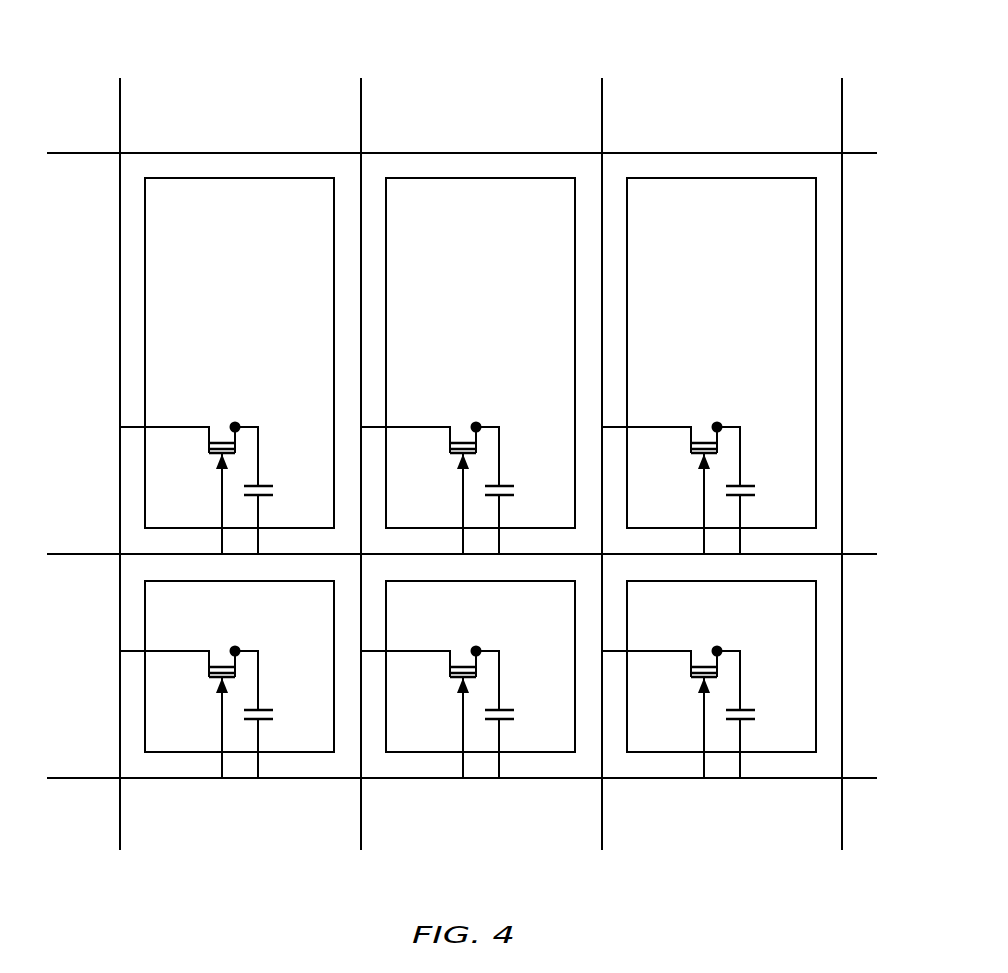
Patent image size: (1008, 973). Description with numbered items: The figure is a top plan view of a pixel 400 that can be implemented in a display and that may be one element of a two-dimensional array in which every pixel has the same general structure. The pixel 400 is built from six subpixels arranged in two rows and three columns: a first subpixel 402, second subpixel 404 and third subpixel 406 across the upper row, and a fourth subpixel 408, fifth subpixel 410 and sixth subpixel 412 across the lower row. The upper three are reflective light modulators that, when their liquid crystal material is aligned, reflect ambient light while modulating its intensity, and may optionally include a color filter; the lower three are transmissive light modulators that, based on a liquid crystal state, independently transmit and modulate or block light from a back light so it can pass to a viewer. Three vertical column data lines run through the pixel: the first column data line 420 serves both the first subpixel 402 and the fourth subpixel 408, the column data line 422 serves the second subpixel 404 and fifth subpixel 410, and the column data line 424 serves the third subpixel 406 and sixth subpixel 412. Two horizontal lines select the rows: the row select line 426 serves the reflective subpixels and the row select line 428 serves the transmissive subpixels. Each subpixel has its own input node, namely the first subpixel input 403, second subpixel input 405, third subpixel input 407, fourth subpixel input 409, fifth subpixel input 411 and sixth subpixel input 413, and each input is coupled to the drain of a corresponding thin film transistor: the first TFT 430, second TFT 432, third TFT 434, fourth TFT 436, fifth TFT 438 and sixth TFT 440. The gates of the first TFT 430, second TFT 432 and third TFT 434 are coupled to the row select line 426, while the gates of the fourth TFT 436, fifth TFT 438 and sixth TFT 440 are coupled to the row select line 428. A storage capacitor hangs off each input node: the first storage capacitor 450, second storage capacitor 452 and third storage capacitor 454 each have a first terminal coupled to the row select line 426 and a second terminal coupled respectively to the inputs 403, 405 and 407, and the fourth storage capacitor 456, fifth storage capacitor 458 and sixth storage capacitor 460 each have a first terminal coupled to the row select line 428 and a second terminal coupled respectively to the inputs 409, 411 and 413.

The pixel 400 is at (820, 32).
The first subpixel 402 is at (241, 197).
The second subpixel 404 is at (482, 197).
The third subpixel 406 is at (723, 197).
The fourth subpixel 408 is at (233, 739).
The fifth subpixel 410 is at (474, 739).
The sixth subpixel 412 is at (715, 739).
The first subpixel input 403 is at (236, 421).
The second subpixel input 405 is at (477, 421).
The third subpixel input 407 is at (718, 421).
The fourth subpixel input 409 is at (236, 645).
The fifth subpixel input 411 is at (477, 645).
The sixth subpixel input 413 is at (718, 645).
The first column data line 420 is at (120, 112).
The column data line 422 is at (361, 112).
The column data line 424 is at (602, 112).
The row select line 426 is at (76, 553).
The row select line 428 is at (77, 777).
The first thin film transistor 430 is at (210, 455).
The second TFT 432 is at (451, 455).
The third TFT 434 is at (692, 455).
The fourth TFT 436 is at (210, 679).
The fifth TFT 438 is at (451, 679).
The sixth TFT 440 is at (692, 679).
The first storage capacitor 450 is at (268, 486).
The second storage capacitor 452 is at (509, 486).
The third storage capacitor 454 is at (750, 486).
The fourth storage capacitor 456 is at (268, 710).
The fifth storage capacitor 458 is at (509, 710).
The sixth storage capacitor 460 is at (750, 710).